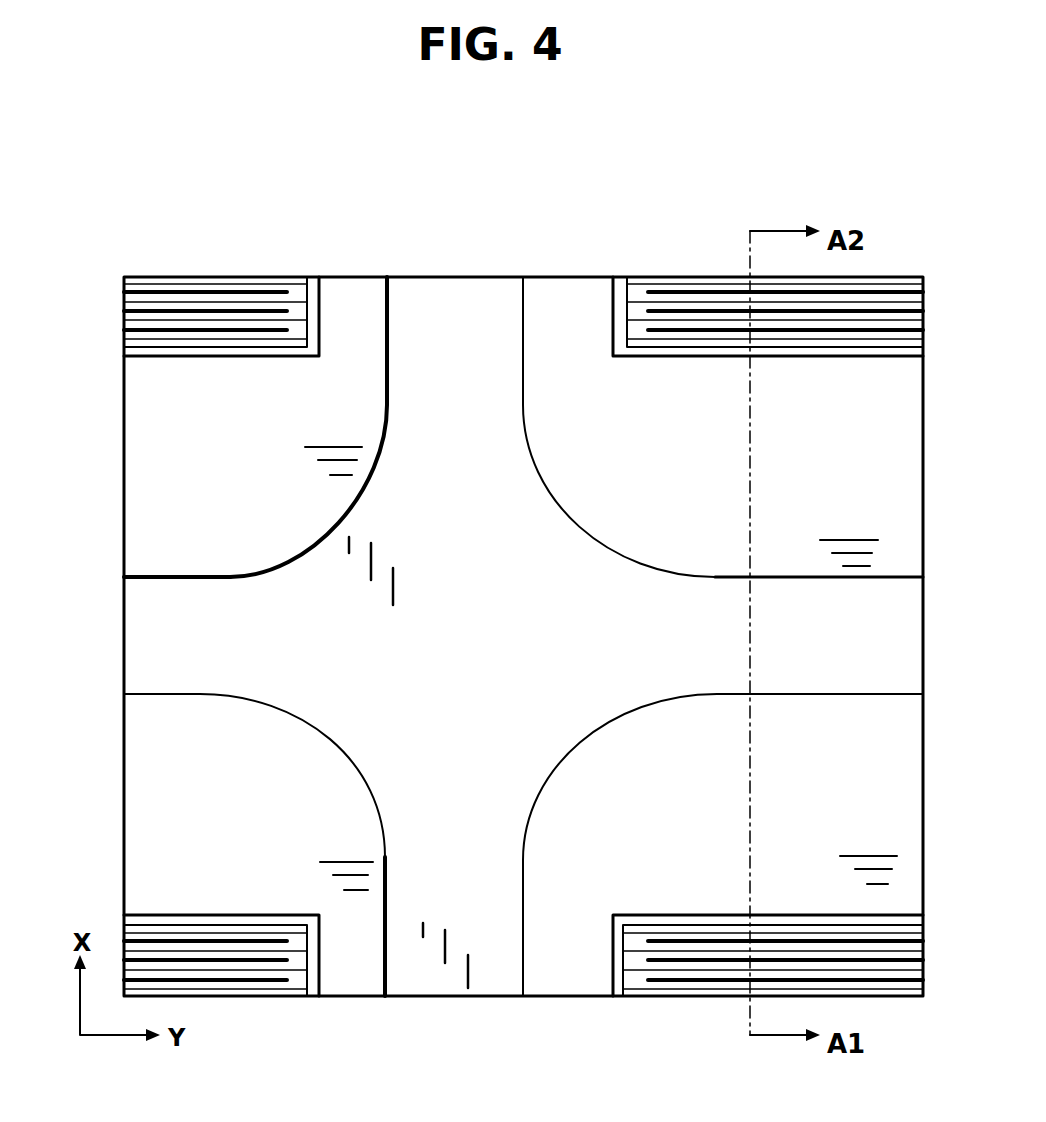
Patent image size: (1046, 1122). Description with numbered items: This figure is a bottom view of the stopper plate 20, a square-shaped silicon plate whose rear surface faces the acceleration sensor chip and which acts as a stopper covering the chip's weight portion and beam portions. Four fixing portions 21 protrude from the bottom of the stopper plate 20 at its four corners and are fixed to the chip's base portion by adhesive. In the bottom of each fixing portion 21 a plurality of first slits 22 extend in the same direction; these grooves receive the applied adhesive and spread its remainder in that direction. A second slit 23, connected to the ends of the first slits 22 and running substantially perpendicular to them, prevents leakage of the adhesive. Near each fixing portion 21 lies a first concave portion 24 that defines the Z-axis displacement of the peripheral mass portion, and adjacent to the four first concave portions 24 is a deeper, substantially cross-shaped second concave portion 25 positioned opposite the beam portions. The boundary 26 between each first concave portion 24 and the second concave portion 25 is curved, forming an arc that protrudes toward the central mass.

The stopper plate 20 is at (545, 277).
The fixing portion 21 is at (157, 357).
The first slit 22 is at (126, 300).
The second slit 23 is at (290, 300).
The first concave portion 24 is at (173, 497).
The second concave portion 25 is at (468, 302).
The boundary 26 is at (405, 315).